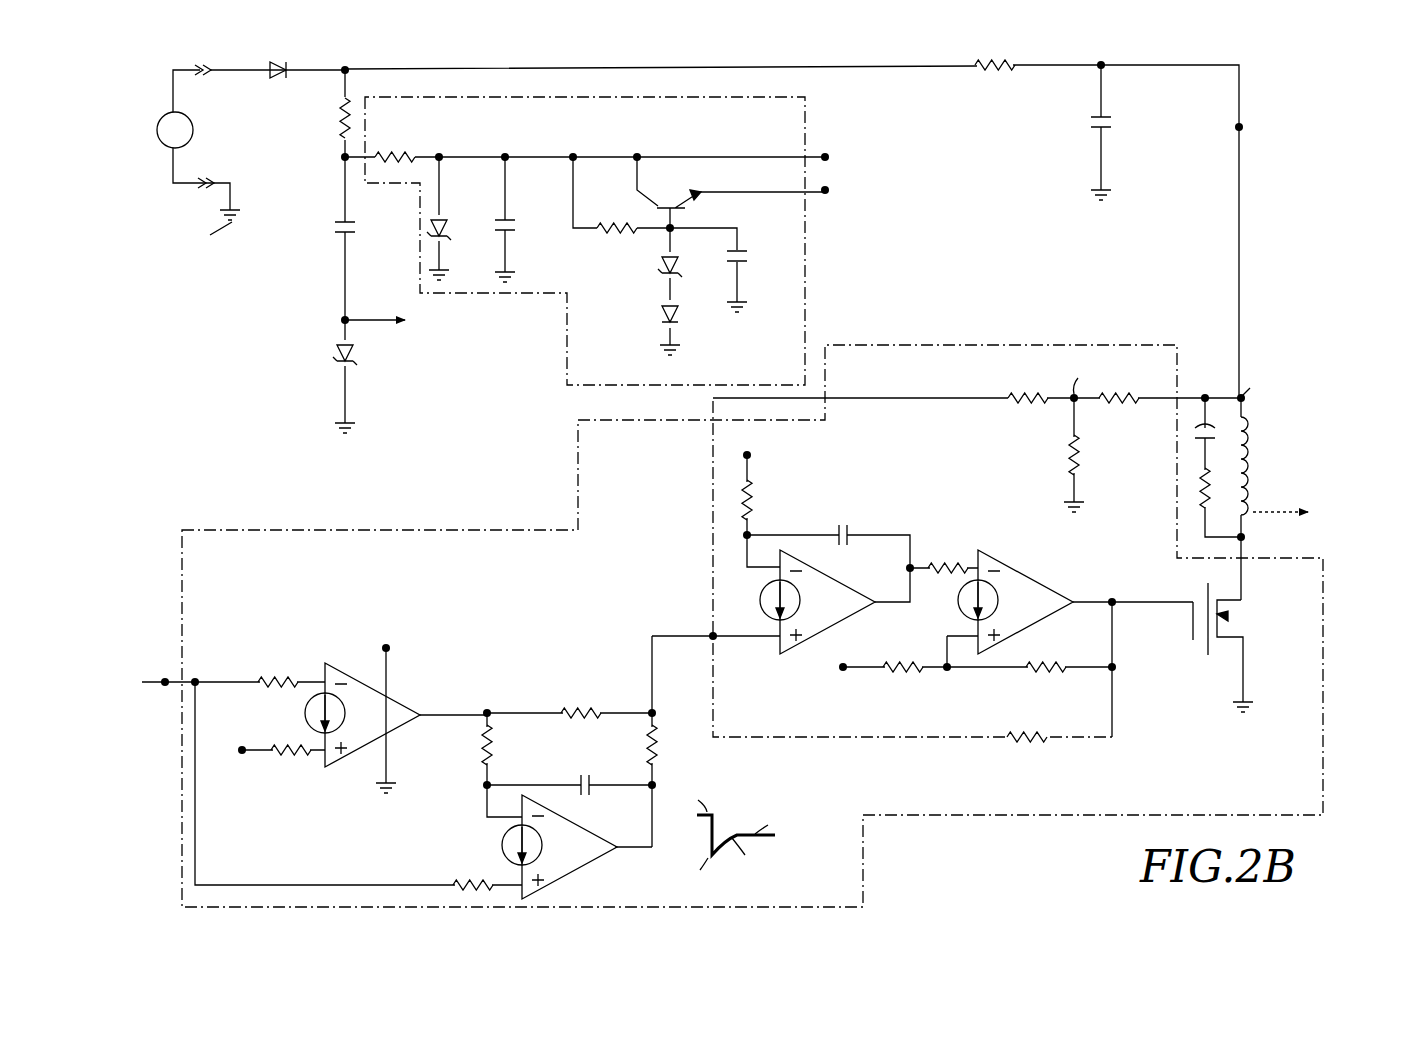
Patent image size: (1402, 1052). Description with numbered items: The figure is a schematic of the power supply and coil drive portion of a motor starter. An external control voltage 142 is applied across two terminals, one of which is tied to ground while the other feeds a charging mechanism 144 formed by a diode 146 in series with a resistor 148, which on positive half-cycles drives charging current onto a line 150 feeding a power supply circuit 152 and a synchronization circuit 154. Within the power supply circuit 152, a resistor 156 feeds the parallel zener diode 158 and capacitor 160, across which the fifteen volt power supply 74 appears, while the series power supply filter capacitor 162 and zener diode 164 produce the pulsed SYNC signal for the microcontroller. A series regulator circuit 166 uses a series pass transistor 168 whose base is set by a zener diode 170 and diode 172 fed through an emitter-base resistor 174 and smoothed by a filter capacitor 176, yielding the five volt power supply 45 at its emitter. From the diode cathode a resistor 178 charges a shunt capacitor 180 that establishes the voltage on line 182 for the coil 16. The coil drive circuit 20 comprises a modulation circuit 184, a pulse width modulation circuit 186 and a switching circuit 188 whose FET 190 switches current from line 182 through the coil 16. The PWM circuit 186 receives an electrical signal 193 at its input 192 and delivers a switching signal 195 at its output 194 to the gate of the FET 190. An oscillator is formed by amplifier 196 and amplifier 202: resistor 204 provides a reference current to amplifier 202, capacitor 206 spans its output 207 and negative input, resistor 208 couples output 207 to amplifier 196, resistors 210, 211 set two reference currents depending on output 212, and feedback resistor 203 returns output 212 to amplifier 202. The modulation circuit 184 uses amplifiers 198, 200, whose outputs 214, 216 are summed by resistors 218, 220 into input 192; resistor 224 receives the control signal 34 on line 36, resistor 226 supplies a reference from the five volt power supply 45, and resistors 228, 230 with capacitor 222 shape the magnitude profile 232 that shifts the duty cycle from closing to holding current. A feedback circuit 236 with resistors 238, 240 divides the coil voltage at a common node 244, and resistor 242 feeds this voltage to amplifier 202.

The control voltage 142 is at (165, 145).
The charging mechanism 144 is at (324, 107).
The diode 146 is at (272, 78).
The resistor 148 is at (338, 115).
The line 150 is at (342, 158).
The power supply circuit 152 is at (805, 262).
The synchronization circuit 154 is at (304, 335).
The resistor 156 is at (382, 152).
The zener diode 158 is at (446, 218).
The capacitor 160 is at (515, 228).
The power supply filter capacitor 162 is at (358, 230).
The zener diode 164 is at (352, 352).
The series regulator circuit 166 is at (634, 282).
The series pass transistor 168 is at (670, 206).
The zener diode 170 is at (680, 266).
The diode 172 is at (680, 318).
The emitter-base resistor 174 is at (612, 236).
The filter capacitor 176 is at (750, 262).
The +15 power supply 74 is at (778, 152).
The +5 power supply 45 is at (778, 196).
The resistor 178 is at (980, 70).
The shunt capacitor 180 is at (1090, 120).
The line 182 is at (1235, 126).
The coil 16 is at (1250, 445).
The modulation circuit 184 is at (529, 618).
The pulse width modulation circuit 186 is at (788, 739).
The switching circuit 188 is at (1191, 692).
The FET 190 is at (1240, 632).
The input 192 is at (710, 634).
The electrical signal 193 is at (750, 634).
The output 194 is at (1114, 598).
The switching signal 195 is at (1152, 604).
The amplifier 196 is at (1012, 572).
The amplifier 198 is at (352, 748).
The amplifier 200 is at (555, 878).
The amplifier 202 is at (818, 586).
The feedback resistor 203 is at (1027, 741).
The resistor 204 is at (754, 508).
The capacitor 206 is at (845, 525).
The output 207 is at (878, 603).
The resistor 208 is at (948, 563).
The resistor 210 is at (906, 671).
The resistor 211 is at (1040, 671).
The output 212 is at (1078, 603).
The output 214 is at (425, 712).
The output 216 is at (618, 850).
The resistor 218 is at (570, 708).
The resistor 220 is at (645, 748).
The capacitor 222 is at (588, 797).
The resistor 224 is at (274, 677).
The resistor 226 is at (278, 745).
The resistor 228 is at (480, 740).
The resistor 230 is at (462, 880).
The magnitude profile 232 is at (804, 802).
The feedback circuit 236 is at (1011, 436).
The resistor 238 is at (1104, 392).
The resistor 240 is at (1080, 452).
The resistor 242 is at (1016, 392).
The common node 244 is at (1072, 403).
The coil drive circuit 20 is at (1300, 812).
The control signal 34 is at (196, 678).
The line 36 is at (165, 678).